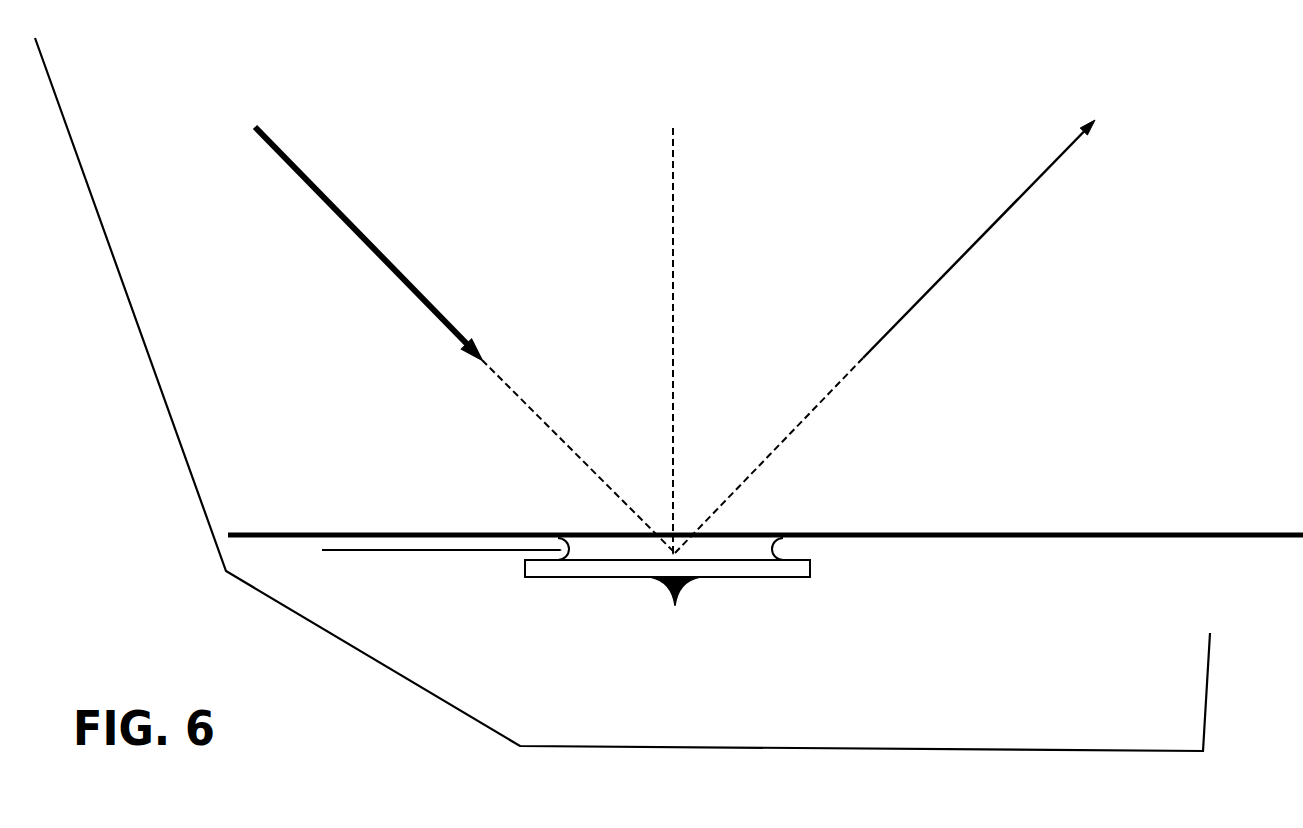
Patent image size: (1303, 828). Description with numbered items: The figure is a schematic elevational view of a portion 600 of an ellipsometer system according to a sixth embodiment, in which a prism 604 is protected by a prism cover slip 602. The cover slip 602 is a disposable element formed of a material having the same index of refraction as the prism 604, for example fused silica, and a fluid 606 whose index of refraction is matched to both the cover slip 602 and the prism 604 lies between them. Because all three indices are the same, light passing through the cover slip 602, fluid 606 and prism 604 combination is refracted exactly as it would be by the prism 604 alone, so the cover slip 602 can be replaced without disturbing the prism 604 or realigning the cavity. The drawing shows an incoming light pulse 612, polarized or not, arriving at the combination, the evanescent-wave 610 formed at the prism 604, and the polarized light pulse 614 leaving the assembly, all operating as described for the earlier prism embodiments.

The portion of an ellipsometer system 600 is at (226, 571).
The prism cover slip 602 is at (958, 537).
The prism 604 is at (548, 583).
The fluid 606 is at (522, 556).
The evanescent-wave 610 is at (697, 593).
The incoming light pulse 612 is at (368, 228).
The polarized light pulse 614 is at (998, 230).